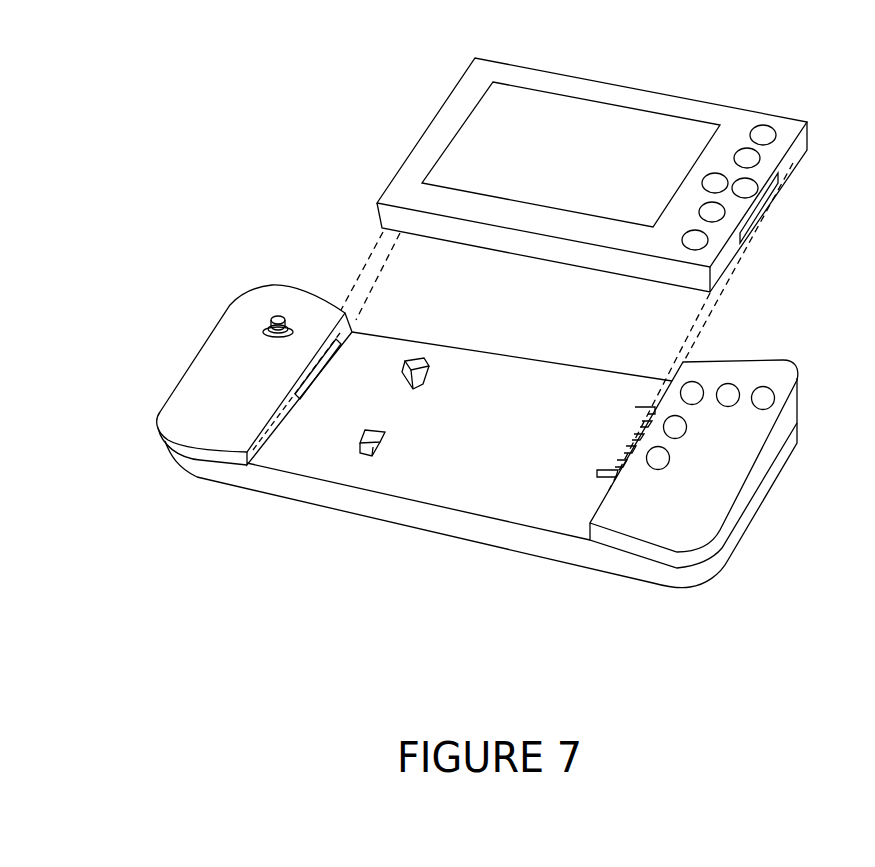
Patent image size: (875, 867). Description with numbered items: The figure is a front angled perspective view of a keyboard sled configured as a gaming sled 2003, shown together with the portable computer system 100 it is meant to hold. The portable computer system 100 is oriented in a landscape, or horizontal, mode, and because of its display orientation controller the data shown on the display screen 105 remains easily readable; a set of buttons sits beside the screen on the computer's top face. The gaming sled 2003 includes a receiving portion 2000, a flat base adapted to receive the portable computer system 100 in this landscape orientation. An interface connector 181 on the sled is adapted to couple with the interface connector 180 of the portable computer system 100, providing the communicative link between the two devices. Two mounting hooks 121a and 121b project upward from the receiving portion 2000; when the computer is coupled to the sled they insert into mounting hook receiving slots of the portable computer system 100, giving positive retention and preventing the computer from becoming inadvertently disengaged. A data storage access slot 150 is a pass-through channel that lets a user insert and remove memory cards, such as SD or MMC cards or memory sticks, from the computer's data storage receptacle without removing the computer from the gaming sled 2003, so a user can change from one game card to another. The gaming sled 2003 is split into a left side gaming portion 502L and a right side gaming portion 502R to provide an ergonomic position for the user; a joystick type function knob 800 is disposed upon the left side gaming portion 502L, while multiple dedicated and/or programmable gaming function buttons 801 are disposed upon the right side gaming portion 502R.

The portable computer system 100 is at (770, 157).
The display screen 105 is at (488, 128).
The interface connector 180 is at (760, 218).
The data storage access slot 150 is at (330, 365).
The receiving portion 2000 is at (480, 477).
The gaming sled 2003 is at (200, 468).
The left side gaming portion 502L is at (215, 385).
The joystick type function knob 800 is at (273, 315).
The mounting hook 121a is at (423, 360).
The mounting hook 121b is at (370, 457).
The right side gaming portion 502R is at (738, 470).
The gaming function buttons 801 is at (763, 397).
The interface connector 181 is at (625, 432).